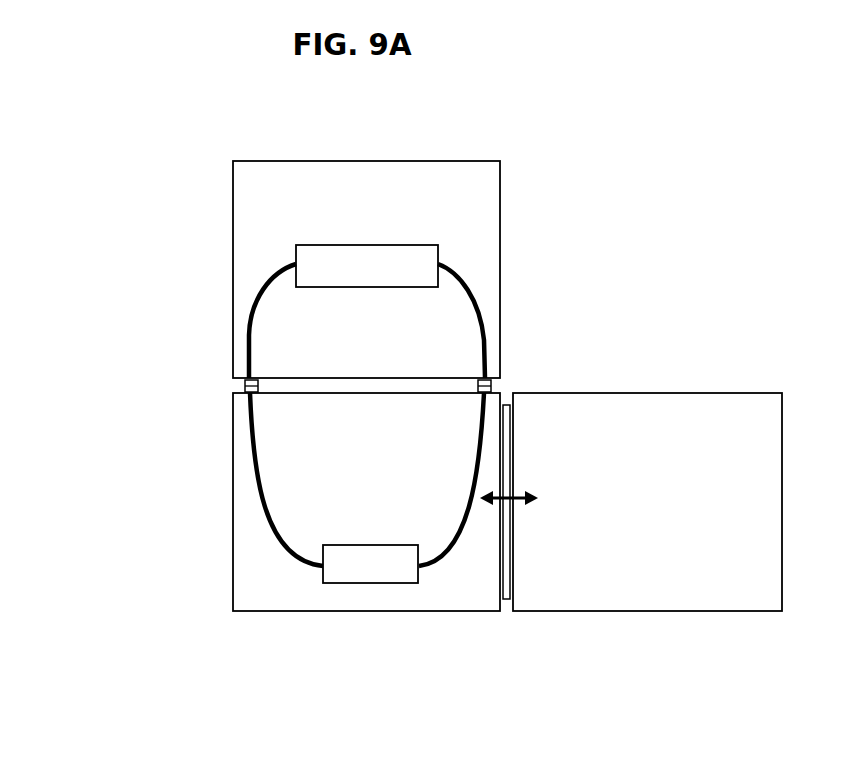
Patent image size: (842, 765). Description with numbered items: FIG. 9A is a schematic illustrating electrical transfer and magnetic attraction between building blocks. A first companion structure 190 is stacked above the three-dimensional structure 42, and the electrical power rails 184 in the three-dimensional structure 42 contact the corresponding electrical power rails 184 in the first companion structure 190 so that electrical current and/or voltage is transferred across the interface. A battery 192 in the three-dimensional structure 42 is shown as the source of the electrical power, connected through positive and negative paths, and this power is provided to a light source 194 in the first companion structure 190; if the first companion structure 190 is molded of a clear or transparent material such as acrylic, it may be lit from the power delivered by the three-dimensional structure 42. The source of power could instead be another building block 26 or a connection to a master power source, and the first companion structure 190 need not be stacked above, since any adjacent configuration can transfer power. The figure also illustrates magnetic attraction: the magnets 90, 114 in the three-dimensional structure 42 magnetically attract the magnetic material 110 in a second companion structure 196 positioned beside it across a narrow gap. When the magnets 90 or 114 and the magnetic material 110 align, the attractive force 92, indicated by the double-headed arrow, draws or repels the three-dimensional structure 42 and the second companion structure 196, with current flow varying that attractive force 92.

The building block 26 is at (643, 126).
The first companion structure 190 is at (265, 160).
The light source 194 is at (367, 245).
The electrical power rails 184 is at (216, 368).
The three-dimensional structure 42 is at (232, 502).
The battery 192 is at (370, 584).
The second companion structure 196 is at (741, 393).
The magnetic material 110 is at (510, 541).
The electromagnet 114 is at (509, 384).
The attractive force 92 is at (537, 496).
The electromagnet 90 is at (491, 622).